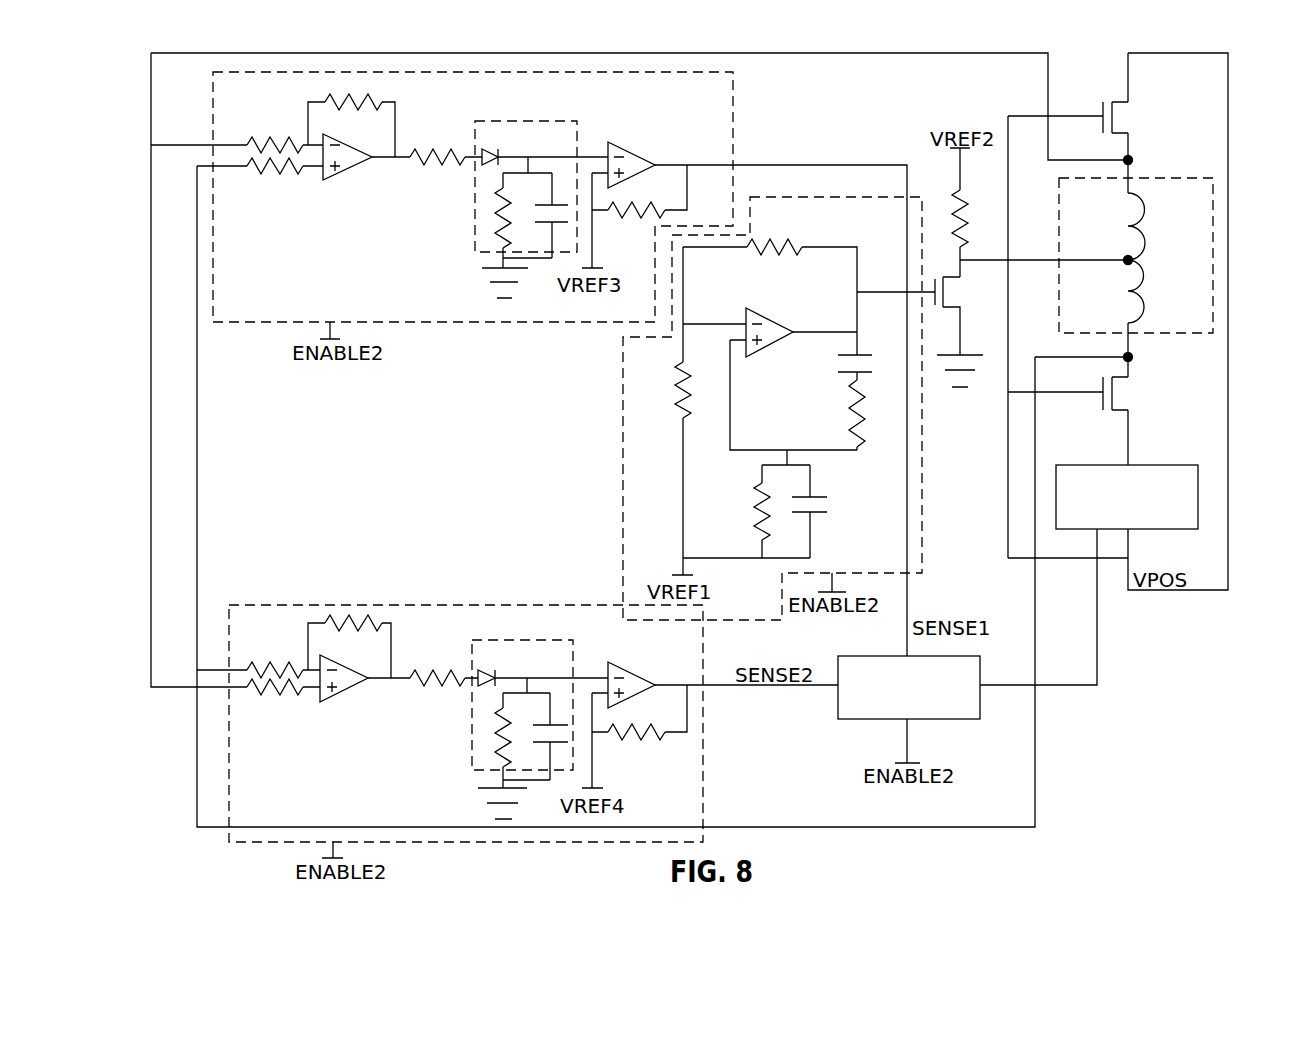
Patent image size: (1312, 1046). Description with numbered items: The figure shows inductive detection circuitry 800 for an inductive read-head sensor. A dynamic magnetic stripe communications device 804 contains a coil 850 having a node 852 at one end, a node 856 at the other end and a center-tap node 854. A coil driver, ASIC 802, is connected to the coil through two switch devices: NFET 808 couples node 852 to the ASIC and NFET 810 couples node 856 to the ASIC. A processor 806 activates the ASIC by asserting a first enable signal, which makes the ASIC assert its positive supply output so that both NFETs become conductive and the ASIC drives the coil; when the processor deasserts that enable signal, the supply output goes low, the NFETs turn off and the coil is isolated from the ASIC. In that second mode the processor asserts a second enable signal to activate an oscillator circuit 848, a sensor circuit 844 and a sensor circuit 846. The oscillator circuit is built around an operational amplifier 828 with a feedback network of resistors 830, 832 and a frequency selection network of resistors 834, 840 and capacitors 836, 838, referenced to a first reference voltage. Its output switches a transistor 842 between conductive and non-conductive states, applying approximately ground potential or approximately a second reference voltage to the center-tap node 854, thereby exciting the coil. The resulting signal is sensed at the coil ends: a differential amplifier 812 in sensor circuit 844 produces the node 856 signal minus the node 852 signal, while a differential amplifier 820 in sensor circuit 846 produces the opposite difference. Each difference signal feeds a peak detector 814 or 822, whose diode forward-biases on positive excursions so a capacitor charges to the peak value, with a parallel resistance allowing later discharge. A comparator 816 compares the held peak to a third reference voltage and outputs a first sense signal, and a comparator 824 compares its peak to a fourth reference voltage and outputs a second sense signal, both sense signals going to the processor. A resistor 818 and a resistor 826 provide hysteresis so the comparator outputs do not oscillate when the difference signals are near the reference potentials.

The inductive detection circuitry 800 is at (1268, 457).
The ASIC 802 is at (1145, 465).
The dynamic magnetic stripe communications device 804 is at (1203, 178).
The processor 806 is at (975, 656).
The NFET 808 is at (1120, 100).
The NFET 810 is at (1115, 408).
The differential amplifier 812 is at (337, 126).
The peak detector 814 is at (500, 121).
The comparator 816 is at (628, 148).
The resistor 818 is at (625, 212).
The differential amplifier 820 is at (335, 656).
The peak detector 822 is at (500, 640).
The comparator 824 is at (625, 668).
The resistor 826 is at (625, 732).
The operational amplifier 828 is at (759, 310).
The resistor 830 is at (773, 242).
The resistor 832 is at (688, 364).
The resistor 834 is at (868, 398).
The capacitor 836 is at (860, 355).
The capacitor 838 is at (818, 497).
The resistor 840 is at (762, 490).
The transistor 842 is at (952, 307).
The sensor circuit 844 is at (733, 138).
The sensor circuit 846 is at (465, 605).
The oscillator circuit 848 is at (787, 197).
The coil 850 is at (1136, 228).
The node 852 is at (1132, 163).
The center-tap node 854 is at (1132, 262).
The node 856 is at (1132, 358).